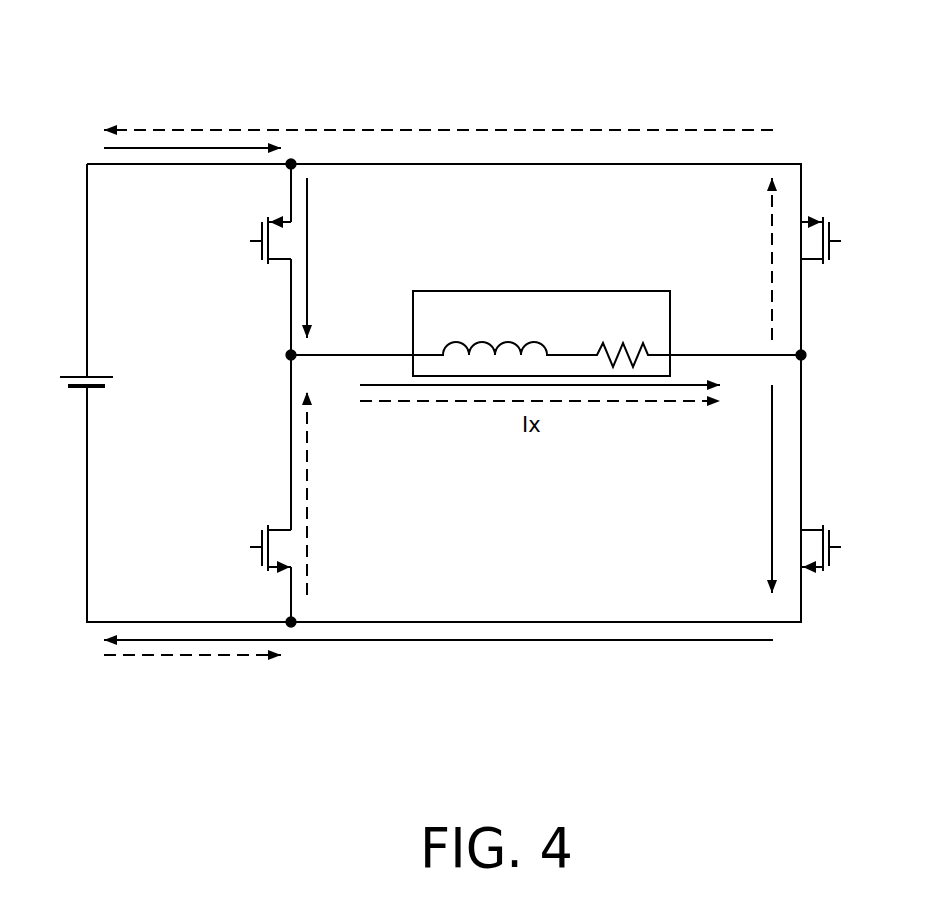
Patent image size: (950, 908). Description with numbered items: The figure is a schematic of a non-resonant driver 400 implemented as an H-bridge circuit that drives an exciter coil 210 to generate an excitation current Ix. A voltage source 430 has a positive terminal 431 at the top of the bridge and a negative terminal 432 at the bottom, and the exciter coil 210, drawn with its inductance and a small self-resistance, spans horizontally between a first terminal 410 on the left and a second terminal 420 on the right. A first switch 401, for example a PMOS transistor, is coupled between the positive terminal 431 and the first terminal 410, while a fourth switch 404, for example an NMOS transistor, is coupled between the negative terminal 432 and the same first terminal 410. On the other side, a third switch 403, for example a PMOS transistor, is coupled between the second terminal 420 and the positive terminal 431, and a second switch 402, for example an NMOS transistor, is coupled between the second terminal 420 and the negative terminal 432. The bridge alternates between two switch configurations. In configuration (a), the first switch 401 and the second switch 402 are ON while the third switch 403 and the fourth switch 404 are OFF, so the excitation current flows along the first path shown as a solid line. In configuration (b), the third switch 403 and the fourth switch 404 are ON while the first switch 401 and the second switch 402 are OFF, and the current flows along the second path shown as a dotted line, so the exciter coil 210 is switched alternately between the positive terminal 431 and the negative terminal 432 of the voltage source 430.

The non-resonant driver 400 is at (76, 106).
The voltage source 430 is at (44, 388).
The positive terminal 431 is at (292, 150).
The negative terminal 432 is at (291, 634).
The first terminal 410 is at (272, 357).
The second terminal 420 is at (817, 357).
The first switch 401 is at (265, 274).
The second switch 402 is at (821, 578).
The third switch 403 is at (826, 269).
The fourth switch 404 is at (266, 583).
The exciter coil 210 is at (538, 291).